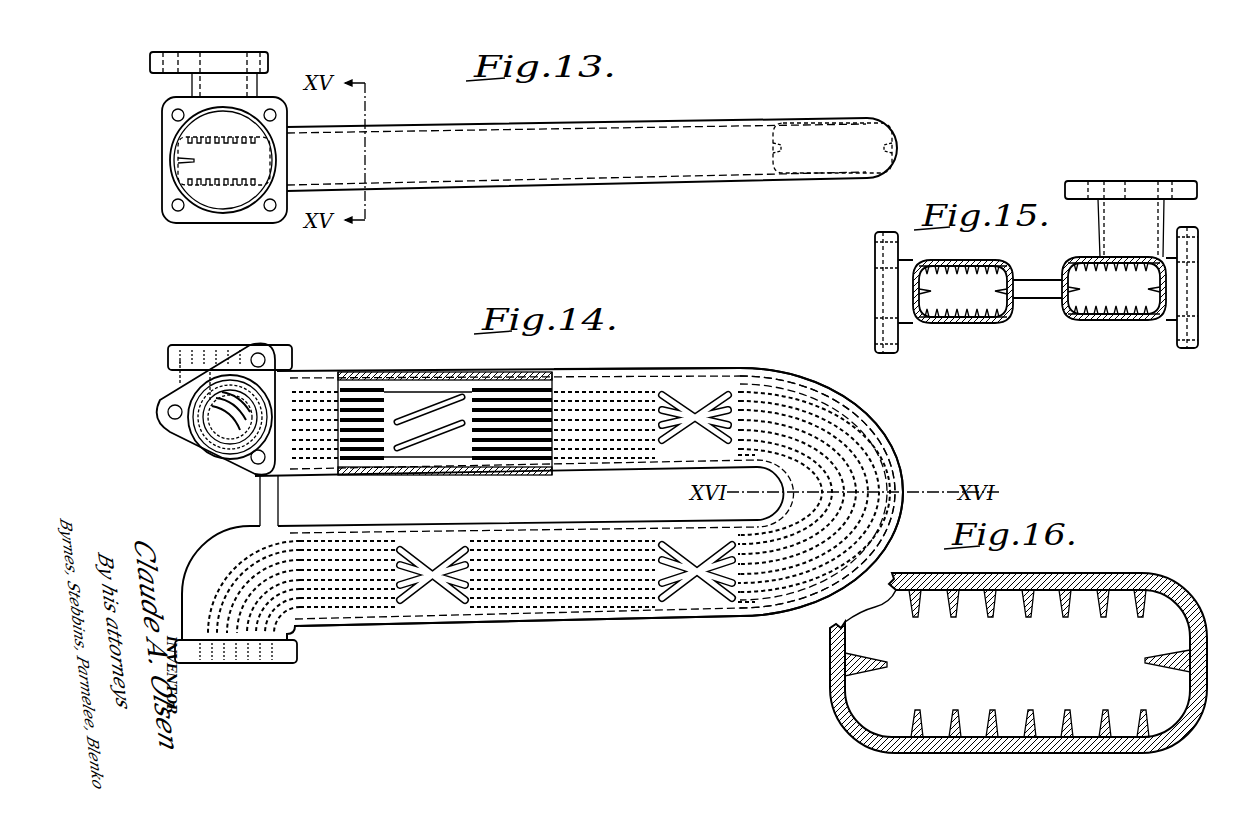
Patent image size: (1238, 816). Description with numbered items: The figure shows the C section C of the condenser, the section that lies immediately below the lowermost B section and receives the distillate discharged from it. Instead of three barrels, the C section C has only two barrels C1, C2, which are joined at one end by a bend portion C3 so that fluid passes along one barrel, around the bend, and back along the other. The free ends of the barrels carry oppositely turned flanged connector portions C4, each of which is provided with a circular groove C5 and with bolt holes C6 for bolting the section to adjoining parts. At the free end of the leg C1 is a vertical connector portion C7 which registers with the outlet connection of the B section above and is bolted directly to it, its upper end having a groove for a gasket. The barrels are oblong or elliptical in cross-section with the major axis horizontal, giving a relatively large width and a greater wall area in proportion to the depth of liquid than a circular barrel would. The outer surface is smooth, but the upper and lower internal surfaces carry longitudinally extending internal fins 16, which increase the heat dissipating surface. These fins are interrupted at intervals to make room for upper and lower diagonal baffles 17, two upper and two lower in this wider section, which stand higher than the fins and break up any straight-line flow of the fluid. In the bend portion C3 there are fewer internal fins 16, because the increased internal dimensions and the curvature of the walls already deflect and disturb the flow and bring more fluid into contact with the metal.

In FIG. 13, the C section C is at (592, 140).
In FIG. 14, the C section C is at (542, 504).
In FIG. 14, the barrel C1 is at (647, 357).
In FIG. 15, the barrel C1 is at (1120, 320).
In FIG. 14, the barrel C2 is at (627, 520).
In FIG. 15, the barrel C2 is at (970, 324).
In FIG. 13, the bend portion C3 is at (893, 141).
In FIG. 14, the bend portion C3 is at (902, 474).
In FIG. 16, the bend portion C3 is at (1018, 663).
In FIG. 13, the flanged connector portion C4 is at (165, 165).
In FIG. 14, the flanged connector portion C4 is at (182, 360).
In FIG. 15, the flanged connector portion C4 is at (876, 293).
In FIG. 13, the circular groove C5 is at (178, 193).
In FIG. 13, the bolt holes C6 is at (176, 210).
In FIG. 13, the vertical connector portion C7 is at (262, 58).
In FIG. 14, the vertical connector portion C7 is at (215, 448).
In FIG. 15, the vertical connector portion C7 is at (1140, 181).
In FIG. 14, the internal fins 16 is at (370, 392).
In FIG. 15, the internal fins 16 is at (970, 272).
In FIG. 14, the diagonal baffles 17 is at (437, 405).